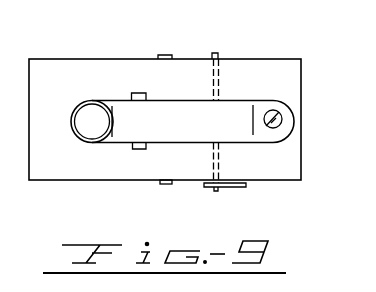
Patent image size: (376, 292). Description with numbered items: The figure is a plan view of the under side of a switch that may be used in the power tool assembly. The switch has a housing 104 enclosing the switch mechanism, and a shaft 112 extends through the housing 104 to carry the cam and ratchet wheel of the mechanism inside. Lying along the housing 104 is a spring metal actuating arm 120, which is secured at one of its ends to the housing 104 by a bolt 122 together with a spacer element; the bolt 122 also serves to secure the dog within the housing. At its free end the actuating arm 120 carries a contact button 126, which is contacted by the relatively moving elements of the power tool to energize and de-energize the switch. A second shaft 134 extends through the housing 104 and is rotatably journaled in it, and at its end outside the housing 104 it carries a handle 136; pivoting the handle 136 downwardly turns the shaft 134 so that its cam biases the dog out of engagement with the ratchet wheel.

The housing 104 is at (84, 84).
The shaft 112 is at (164, 55).
The shaft 134 is at (218, 54).
The spring metal actuating arm 120 is at (196, 131).
The contact button 126 is at (102, 130).
The bolt 122 is at (280, 115).
The handle 136 is at (236, 191).